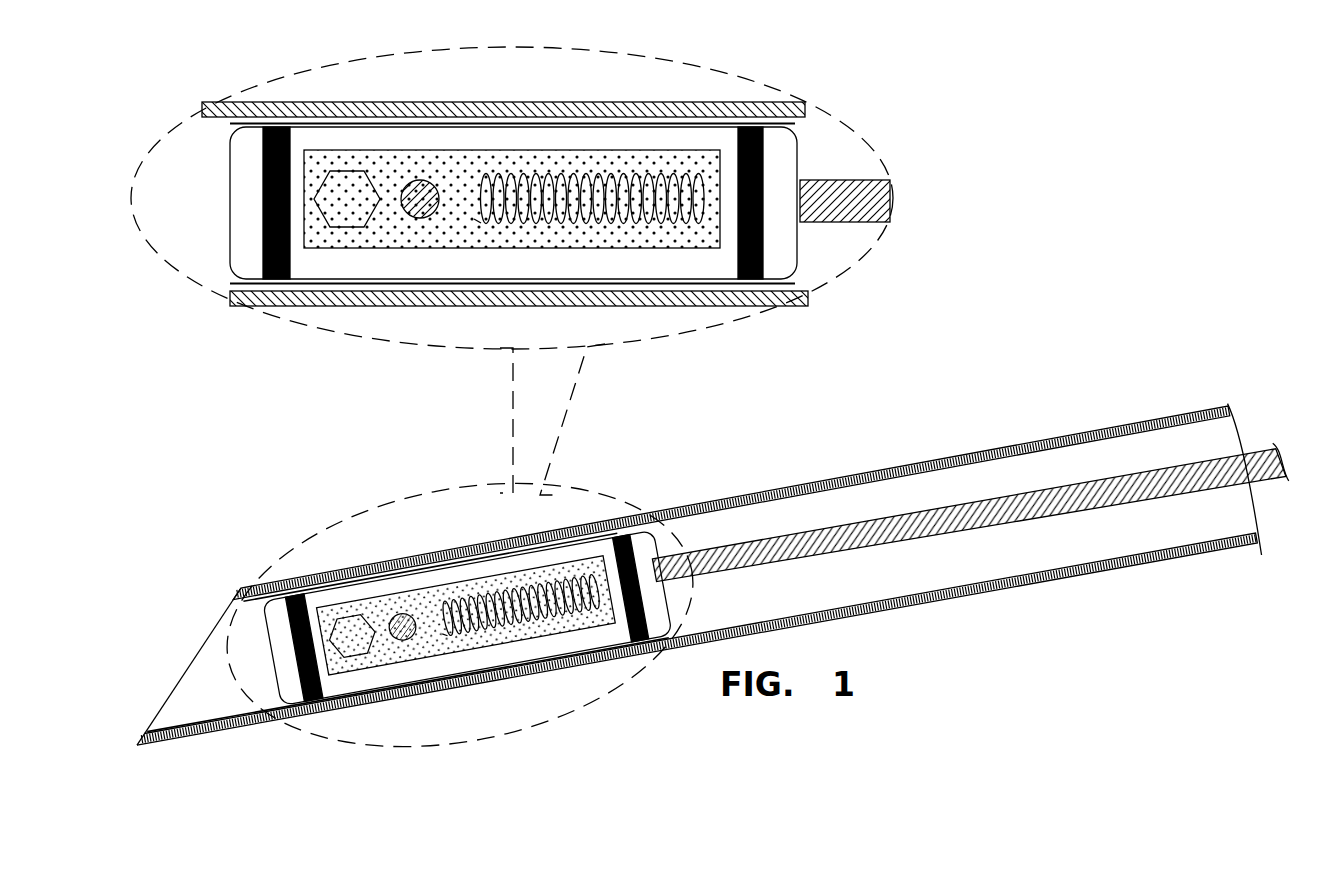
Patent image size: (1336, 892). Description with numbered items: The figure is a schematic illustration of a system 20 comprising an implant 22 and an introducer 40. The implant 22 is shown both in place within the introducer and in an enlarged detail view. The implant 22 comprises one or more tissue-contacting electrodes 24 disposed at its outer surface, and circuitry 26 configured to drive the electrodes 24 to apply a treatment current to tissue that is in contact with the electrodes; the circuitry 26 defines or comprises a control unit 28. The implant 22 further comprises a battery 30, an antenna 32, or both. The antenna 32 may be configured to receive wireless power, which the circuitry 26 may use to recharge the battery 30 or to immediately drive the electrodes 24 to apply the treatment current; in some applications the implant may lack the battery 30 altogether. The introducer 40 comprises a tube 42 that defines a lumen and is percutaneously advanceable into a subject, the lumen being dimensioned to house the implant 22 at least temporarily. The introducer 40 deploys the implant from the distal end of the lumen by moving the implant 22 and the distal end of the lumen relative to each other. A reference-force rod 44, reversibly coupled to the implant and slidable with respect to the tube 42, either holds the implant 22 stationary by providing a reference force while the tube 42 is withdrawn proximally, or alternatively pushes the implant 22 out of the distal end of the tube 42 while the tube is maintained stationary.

The system 20 is at (1086, 326).
The implant 22 is at (209, 143).
The tissue-contacting electrodes 24 is at (281, 282).
The circuitry 26 is at (487, 249).
The control unit 28 is at (347, 183).
The battery 30 is at (405, 182).
The antenna 32 is at (598, 180).
The introducer 40 is at (700, 385).
The tube 42 is at (733, 102).
The reference-force rod 44 is at (857, 182).